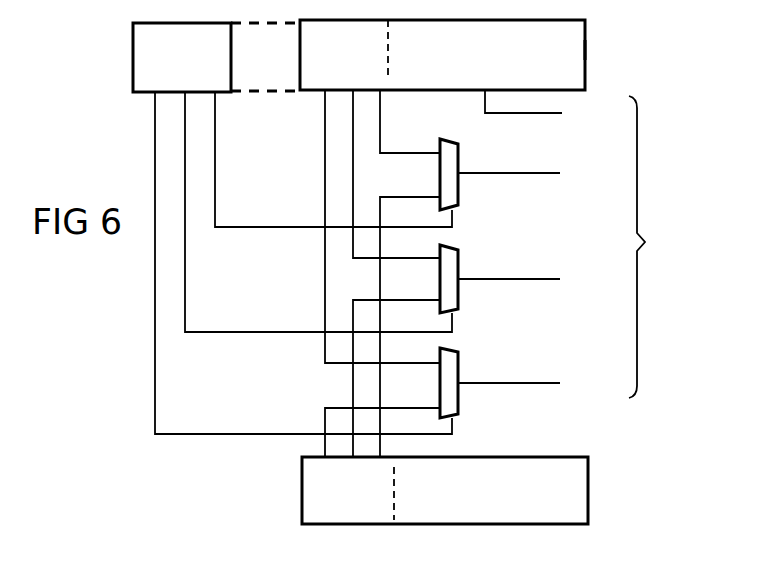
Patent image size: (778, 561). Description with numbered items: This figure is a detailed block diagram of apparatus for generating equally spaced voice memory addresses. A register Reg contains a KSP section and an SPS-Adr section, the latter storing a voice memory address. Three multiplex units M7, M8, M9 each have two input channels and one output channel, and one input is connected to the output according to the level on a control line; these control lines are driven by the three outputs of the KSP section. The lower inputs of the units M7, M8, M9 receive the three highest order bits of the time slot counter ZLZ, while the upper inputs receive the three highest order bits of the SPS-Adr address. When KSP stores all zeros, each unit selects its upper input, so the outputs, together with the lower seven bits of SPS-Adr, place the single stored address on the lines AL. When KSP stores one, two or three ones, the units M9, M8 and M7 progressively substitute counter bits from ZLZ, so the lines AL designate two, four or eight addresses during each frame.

The KSP section of the register KSP is at (292, 228).
The SPS-Adr section of the register SPS-Adr is at (463, 191).
The register Reg is at (604, 58).
The multiplex unit M7 is at (506, 166).
The multiplex unit M8 is at (506, 271).
The multiplex unit M9 is at (506, 375).
The data lines AL is at (651, 247).
The time slot counter ZLZ is at (445, 376).